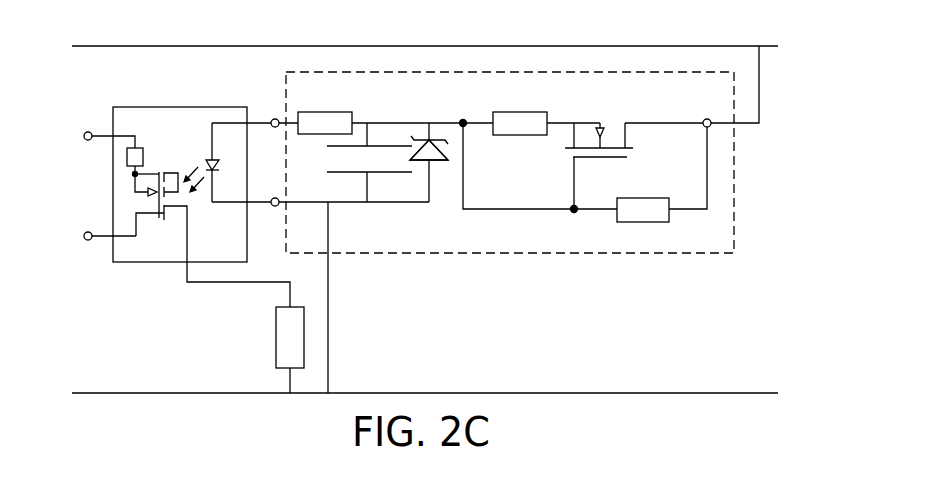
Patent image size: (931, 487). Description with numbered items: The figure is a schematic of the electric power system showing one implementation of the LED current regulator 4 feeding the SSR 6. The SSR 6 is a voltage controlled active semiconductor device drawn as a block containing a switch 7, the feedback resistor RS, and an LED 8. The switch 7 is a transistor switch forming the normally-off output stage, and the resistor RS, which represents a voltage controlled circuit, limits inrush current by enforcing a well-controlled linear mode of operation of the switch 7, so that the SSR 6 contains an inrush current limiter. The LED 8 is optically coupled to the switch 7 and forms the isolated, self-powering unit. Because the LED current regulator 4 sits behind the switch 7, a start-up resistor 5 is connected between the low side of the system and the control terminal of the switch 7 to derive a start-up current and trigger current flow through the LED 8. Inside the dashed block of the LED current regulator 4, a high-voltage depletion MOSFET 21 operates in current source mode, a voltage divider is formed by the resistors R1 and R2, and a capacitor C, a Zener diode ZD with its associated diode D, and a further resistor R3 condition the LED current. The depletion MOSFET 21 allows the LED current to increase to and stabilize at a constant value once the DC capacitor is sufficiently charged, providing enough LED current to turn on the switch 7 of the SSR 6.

The LED current regulator 4 is at (734, 167).
The start-up resistor 5 is at (276, 337).
The SSR 6 is at (178, 107).
The switch 7 is at (145, 213).
The LED 8 is at (218, 168).
The high-voltage depletion MOSFET 21 is at (588, 158).
The resistor RS is at (150, 160).
The resistor R1 is at (520, 136).
The resistor R2 is at (317, 135).
The further resistor R3 is at (647, 223).
The capacitor C is at (395, 175).
The diode D is at (429, 163).
The Zener diode ZD is at (437, 162).